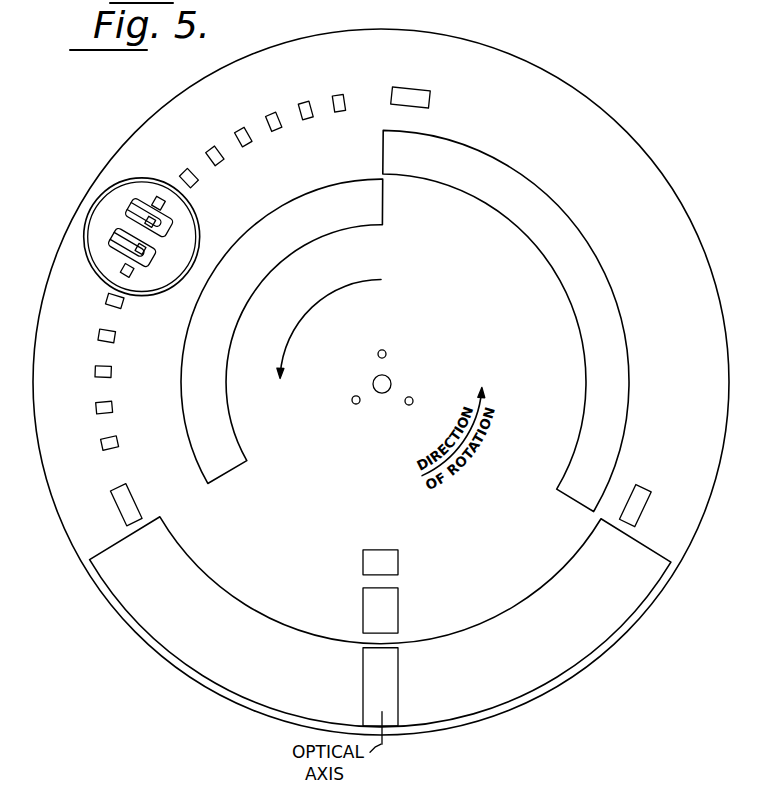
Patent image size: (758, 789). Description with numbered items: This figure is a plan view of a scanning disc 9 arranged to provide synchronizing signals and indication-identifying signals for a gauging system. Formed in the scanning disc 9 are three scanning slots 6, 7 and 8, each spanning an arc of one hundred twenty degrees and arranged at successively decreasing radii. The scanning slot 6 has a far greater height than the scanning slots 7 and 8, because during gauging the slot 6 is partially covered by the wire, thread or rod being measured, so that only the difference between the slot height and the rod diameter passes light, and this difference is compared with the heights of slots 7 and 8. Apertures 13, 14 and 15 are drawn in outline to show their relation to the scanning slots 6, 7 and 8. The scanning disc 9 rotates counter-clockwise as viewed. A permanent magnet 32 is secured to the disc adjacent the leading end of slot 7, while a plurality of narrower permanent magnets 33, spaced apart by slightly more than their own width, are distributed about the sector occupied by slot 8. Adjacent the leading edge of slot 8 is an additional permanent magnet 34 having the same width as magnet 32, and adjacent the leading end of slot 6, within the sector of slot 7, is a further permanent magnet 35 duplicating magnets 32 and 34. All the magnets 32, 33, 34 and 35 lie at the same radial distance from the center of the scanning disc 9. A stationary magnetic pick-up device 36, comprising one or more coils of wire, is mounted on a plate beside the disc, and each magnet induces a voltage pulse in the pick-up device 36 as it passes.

The scanning slot 6 is at (104, 319).
The scanning slot 7 is at (521, 320).
The scanning slot 8 is at (282, 331).
The scanning disc 9 is at (380, 622).
The aperture 13 is at (399, 687).
The aperture 14 is at (400, 611).
The aperture 15 is at (406, 562).
The permanent magnet 32 is at (432, 102).
The permanent magnets 33 is at (220, 272).
The permanent magnet 34 is at (145, 505).
The permanent magnet 35 is at (652, 505).
The magnetic pick-up device 36 is at (160, 237).